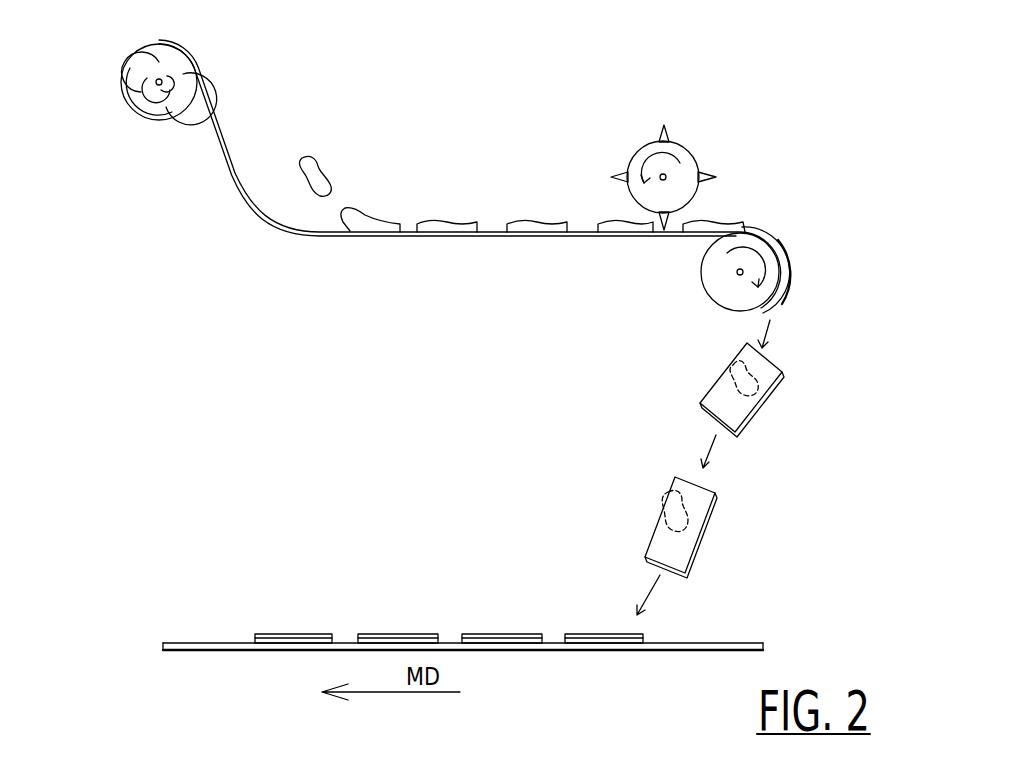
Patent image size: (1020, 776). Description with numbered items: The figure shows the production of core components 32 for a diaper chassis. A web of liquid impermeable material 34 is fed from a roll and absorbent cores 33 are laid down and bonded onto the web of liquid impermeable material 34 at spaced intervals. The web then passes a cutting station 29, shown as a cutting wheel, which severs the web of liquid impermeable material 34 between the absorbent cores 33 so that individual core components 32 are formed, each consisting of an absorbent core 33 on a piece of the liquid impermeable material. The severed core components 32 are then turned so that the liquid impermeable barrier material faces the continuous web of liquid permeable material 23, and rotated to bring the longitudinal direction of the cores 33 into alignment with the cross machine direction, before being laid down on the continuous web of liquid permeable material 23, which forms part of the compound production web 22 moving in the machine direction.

The compound production web 22 is at (206, 637).
The continuous base web of liquid-permeable material 23 is at (572, 650).
The cutting station 29 is at (682, 160).
The core component 32 is at (722, 360).
The absorbent core 33 is at (304, 160).
The web of liquid impermeable material 34 is at (204, 87).